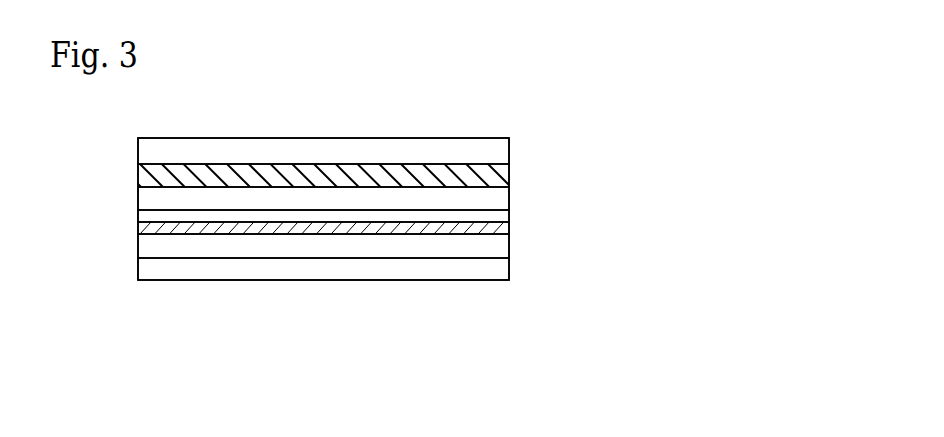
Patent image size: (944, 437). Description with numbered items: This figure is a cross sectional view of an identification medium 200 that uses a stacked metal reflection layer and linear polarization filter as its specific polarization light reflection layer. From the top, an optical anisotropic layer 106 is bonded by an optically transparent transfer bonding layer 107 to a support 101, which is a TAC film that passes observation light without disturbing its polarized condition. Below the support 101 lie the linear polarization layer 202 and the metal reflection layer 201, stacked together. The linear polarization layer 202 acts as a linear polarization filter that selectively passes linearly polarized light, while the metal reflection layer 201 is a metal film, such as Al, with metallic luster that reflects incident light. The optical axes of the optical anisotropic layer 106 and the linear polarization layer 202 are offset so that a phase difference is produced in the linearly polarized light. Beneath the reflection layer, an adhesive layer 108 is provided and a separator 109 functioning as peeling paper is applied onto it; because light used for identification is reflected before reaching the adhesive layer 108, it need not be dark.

The identification medium 200 is at (123, 163).
The optical anisotropic layer 106 is at (497, 150).
The transfer bonding layer 107 is at (503, 173).
The support 101 is at (497, 197).
The linear polarization layer 202 is at (282, 215).
The metal reflection layer 201 is at (182, 236).
The adhesive layer 108 is at (493, 244).
The separator 109 is at (485, 273).